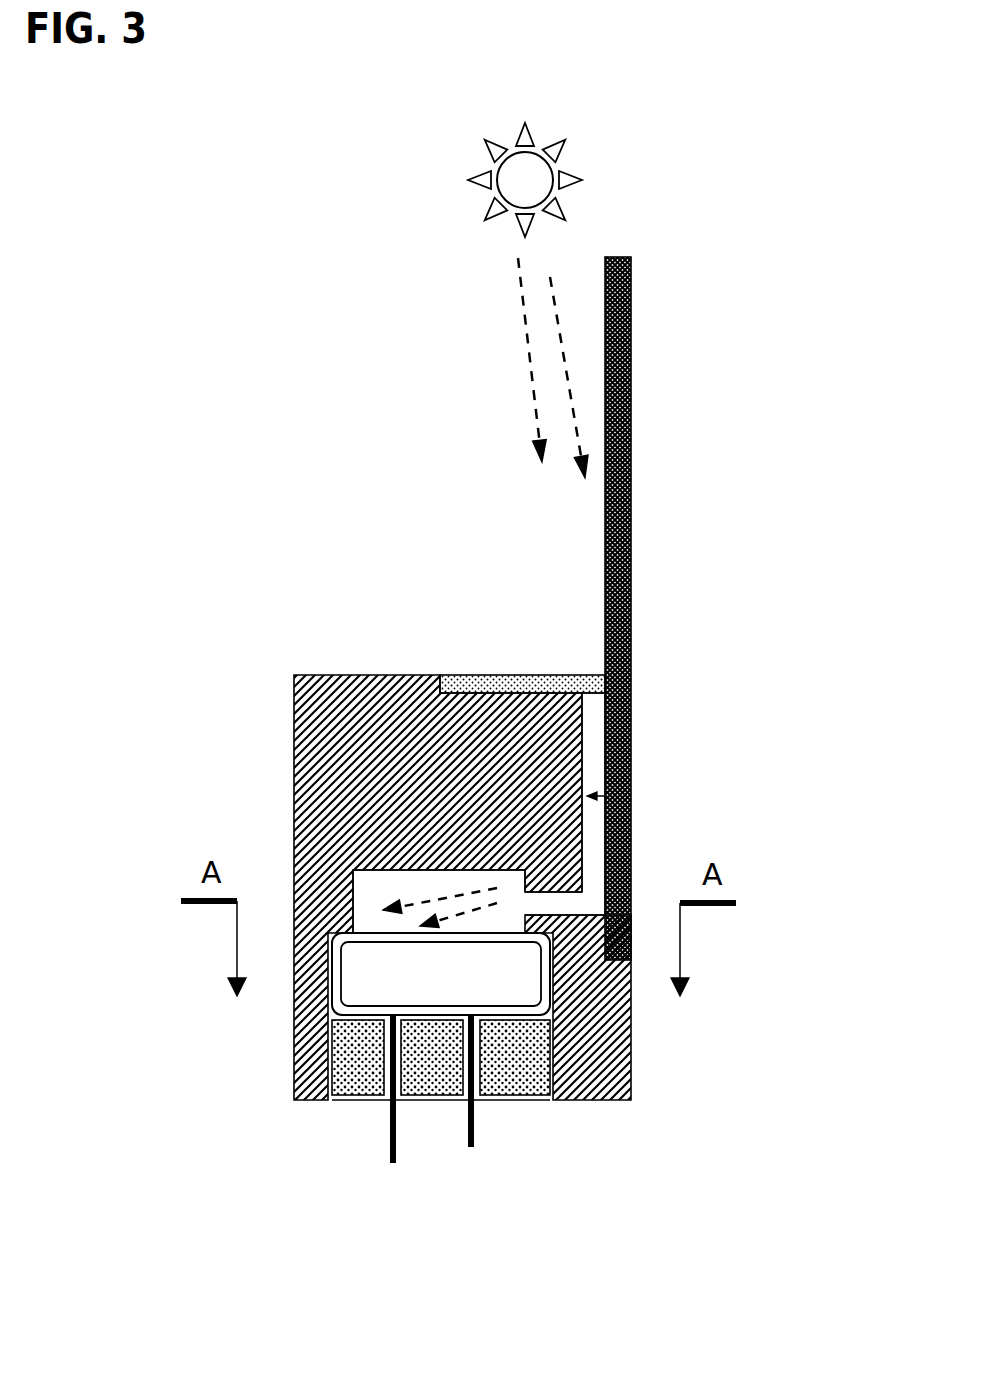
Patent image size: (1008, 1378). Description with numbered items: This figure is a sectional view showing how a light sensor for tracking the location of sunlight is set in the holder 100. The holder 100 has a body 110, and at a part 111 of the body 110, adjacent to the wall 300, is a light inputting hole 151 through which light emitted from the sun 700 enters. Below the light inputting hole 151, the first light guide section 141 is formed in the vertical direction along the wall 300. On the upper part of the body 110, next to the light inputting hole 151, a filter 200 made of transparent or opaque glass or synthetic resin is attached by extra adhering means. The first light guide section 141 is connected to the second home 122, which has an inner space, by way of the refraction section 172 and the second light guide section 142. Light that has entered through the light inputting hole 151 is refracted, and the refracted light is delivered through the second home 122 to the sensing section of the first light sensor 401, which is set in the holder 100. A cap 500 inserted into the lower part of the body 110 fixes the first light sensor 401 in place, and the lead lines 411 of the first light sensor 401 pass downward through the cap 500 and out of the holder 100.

The holder 100 is at (262, 573).
The body 110 is at (418, 927).
The part of the body 111 is at (630, 1050).
The second home 122 is at (370, 904).
The first light guide section 141 is at (631, 779).
The second light guide section 142 is at (546, 905).
The light inputting hole 151 is at (592, 650).
The refraction section 172 is at (587, 904).
The filter 200 is at (498, 675).
The wall 300 is at (631, 515).
The first light sensor 401 is at (483, 992).
The lead line 411 is at (388, 1140).
The cap 500 is at (432, 1067).
The sun 700 is at (568, 158).